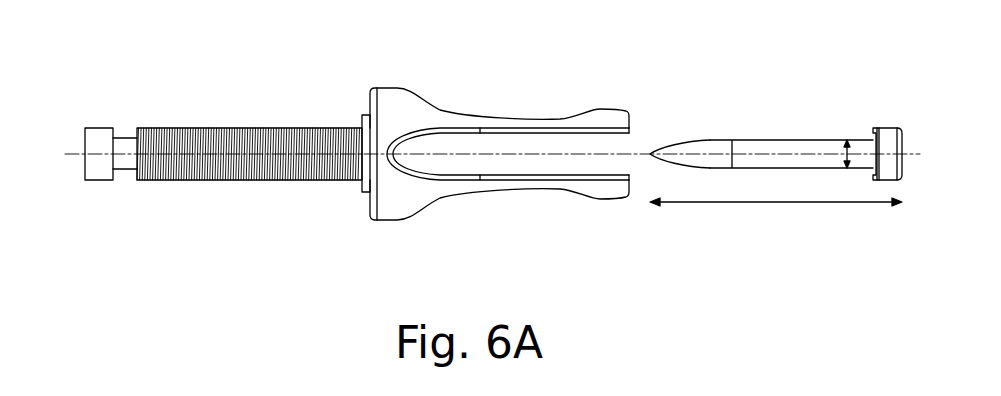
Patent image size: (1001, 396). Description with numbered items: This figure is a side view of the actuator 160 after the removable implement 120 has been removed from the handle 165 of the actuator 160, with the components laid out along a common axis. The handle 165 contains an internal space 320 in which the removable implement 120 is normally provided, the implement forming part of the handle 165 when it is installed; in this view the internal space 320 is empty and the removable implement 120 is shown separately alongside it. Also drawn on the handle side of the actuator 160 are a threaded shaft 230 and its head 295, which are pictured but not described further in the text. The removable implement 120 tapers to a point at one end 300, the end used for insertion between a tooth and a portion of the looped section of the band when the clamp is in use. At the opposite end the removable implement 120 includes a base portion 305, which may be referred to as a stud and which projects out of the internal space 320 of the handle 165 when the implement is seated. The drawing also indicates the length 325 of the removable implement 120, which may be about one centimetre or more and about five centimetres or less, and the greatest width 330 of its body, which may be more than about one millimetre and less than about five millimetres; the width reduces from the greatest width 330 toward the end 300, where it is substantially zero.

The actuator 160 is at (103, 65).
The threaded shaft 230 is at (245, 130).
The head of threaded shaft 295 is at (98, 167).
The handle 165 is at (438, 108).
The internal space 320 is at (503, 143).
The end 300 is at (651, 150).
The removable implement 120 is at (793, 148).
The greatest width 330 is at (846, 143).
The base portion 305 is at (888, 140).
The length 325 is at (777, 202).